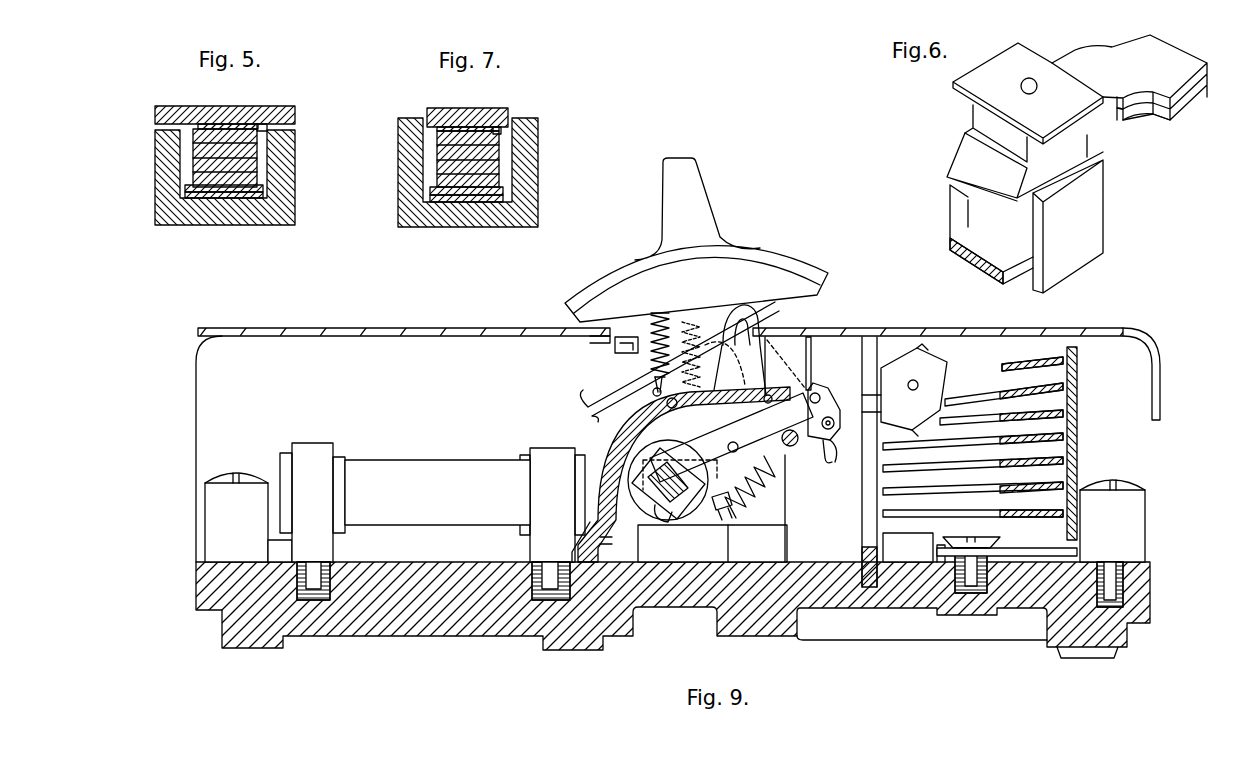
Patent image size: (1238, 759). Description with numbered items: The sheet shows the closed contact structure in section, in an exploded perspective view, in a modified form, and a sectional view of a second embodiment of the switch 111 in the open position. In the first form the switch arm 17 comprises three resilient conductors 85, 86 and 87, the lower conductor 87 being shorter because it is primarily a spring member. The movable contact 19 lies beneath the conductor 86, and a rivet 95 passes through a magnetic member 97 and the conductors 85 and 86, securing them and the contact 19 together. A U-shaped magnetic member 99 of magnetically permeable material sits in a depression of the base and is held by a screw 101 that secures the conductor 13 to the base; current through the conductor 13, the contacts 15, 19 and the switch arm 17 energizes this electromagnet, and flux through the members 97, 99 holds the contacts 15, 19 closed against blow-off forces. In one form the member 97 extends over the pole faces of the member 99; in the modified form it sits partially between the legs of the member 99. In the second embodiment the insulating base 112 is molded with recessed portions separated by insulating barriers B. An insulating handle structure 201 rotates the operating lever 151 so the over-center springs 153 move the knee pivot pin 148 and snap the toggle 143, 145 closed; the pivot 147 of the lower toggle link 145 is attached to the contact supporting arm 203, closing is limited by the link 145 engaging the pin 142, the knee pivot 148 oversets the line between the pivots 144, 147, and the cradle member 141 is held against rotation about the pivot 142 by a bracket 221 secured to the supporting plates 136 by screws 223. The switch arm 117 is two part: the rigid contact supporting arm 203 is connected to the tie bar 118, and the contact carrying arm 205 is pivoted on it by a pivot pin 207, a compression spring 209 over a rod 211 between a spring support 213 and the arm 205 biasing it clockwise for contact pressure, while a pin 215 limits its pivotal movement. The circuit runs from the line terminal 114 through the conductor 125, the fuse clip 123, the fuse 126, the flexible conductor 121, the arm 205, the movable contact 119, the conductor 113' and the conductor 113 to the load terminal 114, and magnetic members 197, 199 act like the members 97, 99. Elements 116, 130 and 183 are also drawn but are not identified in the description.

In FIG. 5, the conductor 13 is at (243, 196).
In FIG. 7, the conductor 13 is at (485, 198).
In FIG. 6, the conductor 13 is at (965, 238).
In FIG. 5, the stationary contact 15 is at (208, 190).
In FIG. 7, the stationary contact 15 is at (452, 192).
In FIG. 6, the stationary contact 15 is at (987, 205).
In FIG. 6, the switch arm 17 is at (1130, 72).
In FIG. 5, the movable contact 19 is at (200, 153).
In FIG. 7, the movable contact 19 is at (445, 157).
In FIG. 6, the movable contact 19 is at (1080, 147).
In FIG. 5, the resilient conductor 85 is at (229, 126).
In FIG. 7, the resilient conductor 85 is at (463, 129).
In FIG. 6, the resilient conductor 85 is at (1120, 102).
In FIG. 5, the resilient conductor 86 is at (263, 128).
In FIG. 7, the resilient conductor 86 is at (497, 133).
In FIG. 6, the resilient conductor 86 is at (1160, 112).
In FIG. 6, the resilient conductor 87 is at (1180, 112).
In FIG. 6, the rivet 95 is at (1021, 84).
In FIG. 5, the magnetic member 97 is at (168, 110).
In FIG. 7, the magnetic member 97 is at (441, 112).
In FIG. 6, the magnetic member 97 is at (1017, 58).
In FIG. 5, the U-shaped magnetic member 99 is at (291, 169).
In FIG. 7, the U-shaped magnetic member 99 is at (533, 171).
In FIG. 6, the U-shaped magnetic member 99 is at (1095, 231).
In FIG. 9, the insulating barrier B is at (282, 334).
In FIG. 9, the screw 101 is at (975, 596).
In FIG. 9, the switch 111 is at (1172, 455).
In FIG. 9, the insulating base 112 is at (781, 622).
In FIG. 9, the conductor 113 is at (1007, 539).
In FIG. 9, the conductor 113' is at (971, 532).
In FIG. 9, the terminal 114 is at (205, 531).
In FIG. 9, the terminal screw head 116 is at (210, 476).
In FIG. 9, the switch arm 117 is at (851, 410).
In FIG. 9, the tie bar 118 is at (666, 514).
In FIG. 9, the movable contact 119 is at (915, 415).
In FIG. 9, the flexible conductor 121 is at (610, 447).
In FIG. 9, the fuse clip 123 is at (316, 452).
In FIG. 9, the conductor 125 is at (270, 540).
In FIG. 9, the fuse 126 is at (458, 462).
In FIG. 9, the contact fingers 130 is at (1010, 480).
In FIG. 9, the supporting plate 136 is at (806, 348).
In FIG. 9, the cradle member 141 is at (584, 398).
In FIG. 9, the pivot pin 142 is at (771, 395).
In FIG. 9, the toggle link 143 is at (705, 345).
In FIG. 9, the pivot 144 is at (758, 322).
In FIG. 9, the lower toggle link 145 is at (684, 450).
In FIG. 9, the pivot 147 is at (770, 456).
In FIG. 9, the knee pivot pin 148 is at (609, 432).
In FIG. 9, the operating lever 151 is at (652, 373).
In FIG. 9, the over-center springs 153 is at (660, 315).
In FIG. 9, the stop post 183 is at (764, 344).
In FIG. 9, the magnetic member 197 is at (925, 352).
In FIG. 9, the magnetic member 199 is at (885, 546).
In FIG. 9, the insulating handle structure 201 is at (745, 262).
In FIG. 9, the contact supporting arm 203 is at (813, 386).
In FIG. 9, the contact carrying arm 205 is at (830, 458).
In FIG. 9, the pivot pin 207 is at (826, 446).
In FIG. 9, the compression spring 209 is at (740, 505).
In FIG. 9, the rod 211 is at (723, 522).
In FIG. 9, the spring support 213 is at (718, 512).
In FIG. 9, the pin 215 is at (818, 395).
In FIG. 9, the bracket 221 is at (613, 347).
In FIG. 9, the screws 223 is at (628, 340).